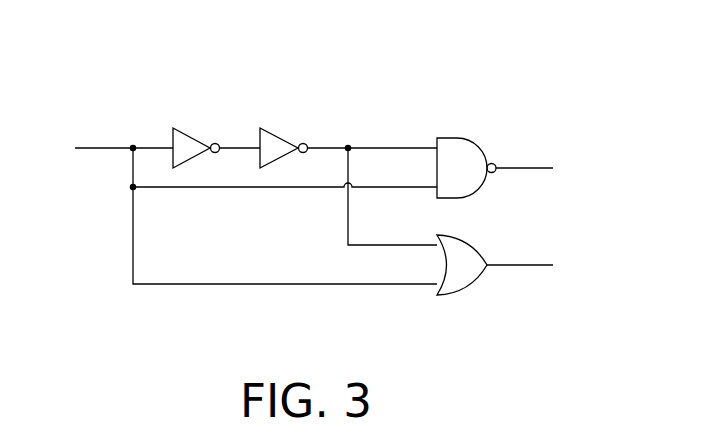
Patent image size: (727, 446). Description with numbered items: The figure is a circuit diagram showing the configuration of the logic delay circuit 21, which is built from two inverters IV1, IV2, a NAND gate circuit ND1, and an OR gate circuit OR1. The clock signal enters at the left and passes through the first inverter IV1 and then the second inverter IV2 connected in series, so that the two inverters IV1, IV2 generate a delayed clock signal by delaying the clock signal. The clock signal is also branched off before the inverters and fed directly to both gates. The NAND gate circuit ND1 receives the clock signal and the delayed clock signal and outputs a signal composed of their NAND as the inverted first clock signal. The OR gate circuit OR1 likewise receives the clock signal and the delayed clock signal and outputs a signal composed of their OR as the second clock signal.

The logic delay circuit 21 is at (597, 44).
The inverter IV1 is at (189, 133).
The inverter IV2 is at (279, 133).
The NAND gate circuit ND1 is at (466, 139).
The OR gate circuit OR1 is at (467, 241).